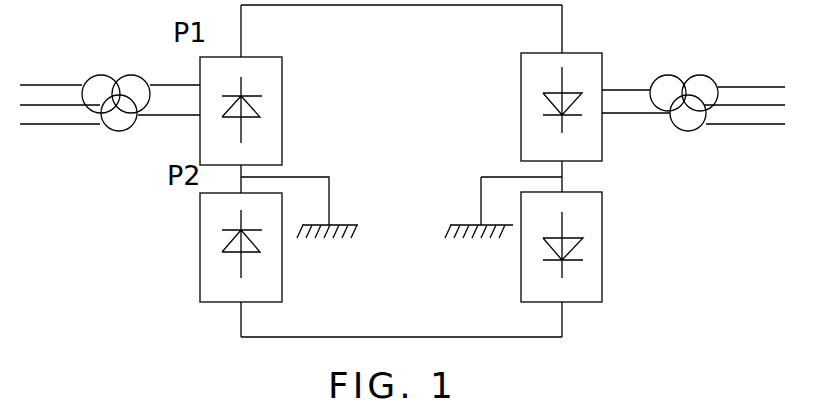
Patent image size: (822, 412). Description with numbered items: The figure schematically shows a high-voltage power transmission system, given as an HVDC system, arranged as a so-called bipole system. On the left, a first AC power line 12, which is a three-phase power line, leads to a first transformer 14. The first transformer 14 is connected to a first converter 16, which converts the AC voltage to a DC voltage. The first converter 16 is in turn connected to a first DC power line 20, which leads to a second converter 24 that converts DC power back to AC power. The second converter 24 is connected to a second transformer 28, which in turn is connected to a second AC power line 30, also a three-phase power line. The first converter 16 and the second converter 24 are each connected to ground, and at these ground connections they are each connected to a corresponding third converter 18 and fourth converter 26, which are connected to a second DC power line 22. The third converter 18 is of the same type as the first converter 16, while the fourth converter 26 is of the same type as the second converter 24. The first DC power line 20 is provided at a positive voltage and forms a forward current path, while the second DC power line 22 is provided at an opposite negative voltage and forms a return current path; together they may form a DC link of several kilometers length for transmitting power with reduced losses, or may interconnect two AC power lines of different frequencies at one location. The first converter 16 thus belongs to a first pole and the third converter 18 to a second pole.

The first AC power line 12 is at (62, 82).
The first transformer 14 is at (125, 75).
The first converter 16 is at (282, 117).
The third converter 18 is at (200, 242).
The first DC power line 20 is at (445, 5).
The second DC power line 22 is at (357, 337).
The second converter 24 is at (521, 110).
The fourth converter 26 is at (602, 262).
The second transformer 28 is at (680, 80).
The second AC power line 30 is at (762, 125).